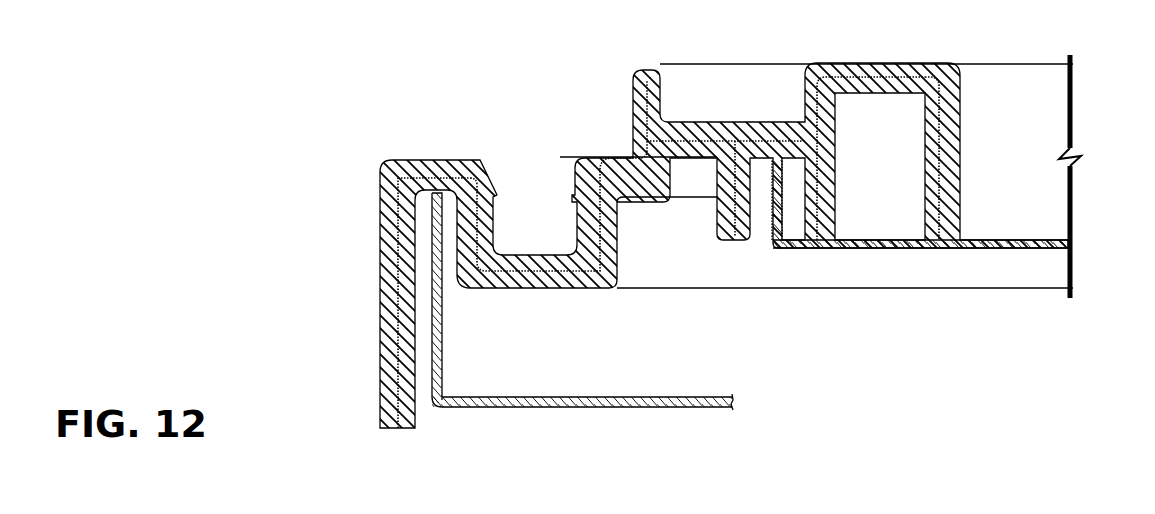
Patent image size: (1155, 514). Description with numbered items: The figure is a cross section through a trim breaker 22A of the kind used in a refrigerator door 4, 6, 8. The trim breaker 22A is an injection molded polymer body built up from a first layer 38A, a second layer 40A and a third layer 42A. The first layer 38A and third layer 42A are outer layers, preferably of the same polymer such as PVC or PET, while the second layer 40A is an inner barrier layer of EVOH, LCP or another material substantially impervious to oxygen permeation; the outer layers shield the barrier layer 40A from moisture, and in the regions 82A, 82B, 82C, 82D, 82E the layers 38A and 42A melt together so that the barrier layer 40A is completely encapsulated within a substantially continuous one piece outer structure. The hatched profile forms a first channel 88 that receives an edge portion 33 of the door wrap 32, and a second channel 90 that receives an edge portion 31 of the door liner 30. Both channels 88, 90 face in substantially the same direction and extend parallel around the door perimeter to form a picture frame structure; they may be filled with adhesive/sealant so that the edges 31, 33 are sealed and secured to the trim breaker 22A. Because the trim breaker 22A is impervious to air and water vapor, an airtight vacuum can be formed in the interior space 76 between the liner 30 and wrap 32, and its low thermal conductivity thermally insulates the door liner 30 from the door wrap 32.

The door 4 is at (837, 153).
The door 6 is at (837, 153).
The door 8 is at (986, 58).
The trim breaker 22A is at (655, 238).
The door liner 30 is at (1038, 250).
The edge portion of door liner 31 is at (780, 170).
The door wrap 32 is at (562, 395).
The edge portion of door wrap 33 is at (432, 220).
The first layer 38A is at (356, 317).
The second layer 40A is at (390, 388).
The third layer 42A is at (412, 397).
The interior space 76 is at (578, 346).
The region 82A is at (398, 415).
The region 82B is at (647, 72).
The region 82C is at (740, 238).
The region 82D is at (822, 242).
The region 82E is at (940, 215).
The first channel 88 is at (447, 245).
The second channel 90 is at (763, 207).